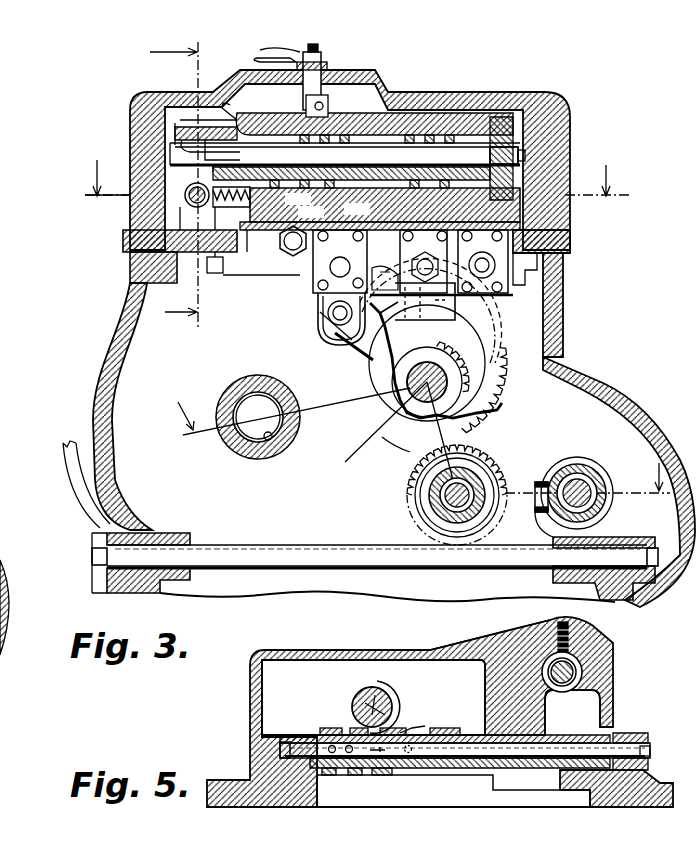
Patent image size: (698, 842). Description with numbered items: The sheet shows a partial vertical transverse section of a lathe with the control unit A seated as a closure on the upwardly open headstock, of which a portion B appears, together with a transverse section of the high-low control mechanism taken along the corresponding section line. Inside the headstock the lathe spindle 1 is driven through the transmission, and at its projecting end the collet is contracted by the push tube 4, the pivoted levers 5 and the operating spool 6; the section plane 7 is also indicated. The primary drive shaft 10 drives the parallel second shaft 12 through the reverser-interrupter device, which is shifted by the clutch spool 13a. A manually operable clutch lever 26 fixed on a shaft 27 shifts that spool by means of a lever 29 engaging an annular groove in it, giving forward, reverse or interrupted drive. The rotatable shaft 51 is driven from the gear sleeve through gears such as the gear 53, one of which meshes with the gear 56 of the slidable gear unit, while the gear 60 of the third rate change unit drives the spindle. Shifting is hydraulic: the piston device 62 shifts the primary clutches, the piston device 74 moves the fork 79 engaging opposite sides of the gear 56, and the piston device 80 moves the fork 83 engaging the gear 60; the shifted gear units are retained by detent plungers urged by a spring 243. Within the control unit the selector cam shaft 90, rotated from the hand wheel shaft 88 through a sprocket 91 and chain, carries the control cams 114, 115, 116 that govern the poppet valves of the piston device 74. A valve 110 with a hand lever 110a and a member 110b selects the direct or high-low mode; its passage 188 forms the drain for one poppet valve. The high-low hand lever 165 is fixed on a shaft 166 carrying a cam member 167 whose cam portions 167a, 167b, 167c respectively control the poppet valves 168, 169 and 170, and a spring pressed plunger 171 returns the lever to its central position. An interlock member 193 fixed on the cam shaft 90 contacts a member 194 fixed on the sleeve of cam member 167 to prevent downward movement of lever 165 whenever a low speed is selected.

In FIG. 3, the lathe spindle 1 is at (228, 455).
In FIG. 3, the push tube 4 is at (272, 440).
In FIG. 3, the pivoted levers 5 is at (165, 186).
In FIG. 3, the operating spool 6 is at (423, 438).
In FIG. 3, the section line 7- 7 is at (358, 169).
In FIG. 3, the primary drive shaft 10 is at (598, 506).
In FIG. 3, the second shaft 12 is at (470, 480).
In FIG. 3, the clutch spool 13a is at (585, 470).
In FIG. 3, the clutch lever 26 is at (65, 458).
In FIG. 3, the shaft 27 is at (273, 552).
In FIG. 3, the lever 29 is at (545, 510).
In FIG. 3, the rotatable shaft 51 is at (375, 432).
In FIG. 3, the gear 53 is at (412, 480).
In FIG. 3, the gear 56 is at (380, 379).
In FIG. 3, the gear 60 is at (500, 374).
In FIG. 3, the piston device 62 is at (512, 280).
In FIG. 3, the piston device 74 is at (315, 280).
In FIG. 3, the fork 79 is at (348, 342).
In FIG. 3, the piston device 80 is at (468, 308).
In FIG. 3, the fork 83 is at (455, 312).
In FIG. 5, the shaft 88 is at (572, 672).
In FIG. 3, the selector cam shaft 90 is at (388, 150).
In FIG. 5, the selector cam shaft 90 is at (370, 703).
In FIG. 3, the sprocket 91 is at (176, 131).
In FIG. 3, the valve 110 is at (338, 60).
In FIG. 3, the hand lever 110a is at (268, 45).
In FIG. 3, the valve member 110b is at (318, 56).
In FIG. 3, the control cam 114 is at (298, 200).
In FIG. 3, the control cam 115 is at (311, 213).
In FIG. 3, the control cam 116 is at (357, 210).
In FIG. 5, the hand lever 165 is at (632, 740).
In FIG. 3, the shaft 166 is at (197, 205).
In FIG. 5, the shaft 166 is at (524, 752).
In FIG. 3, the cam member 167 is at (130, 249).
In FIG. 5, the cam member 167 is at (420, 733).
In FIG. 5, the cam portion 167a is at (333, 762).
In FIG. 5, the cam portion 167b is at (352, 765).
In FIG. 5, the cam portion 167c is at (410, 762).
In FIG. 5, the poppet valve 168 is at (328, 730).
In FIG. 5, the poppet valve 169 is at (350, 732).
In FIG. 5, the poppet valve 170 is at (408, 768).
In FIG. 3, the spring pressed plunger 171 is at (237, 260).
In FIG. 3, the passage 188 is at (245, 108).
In FIG. 3, the interlock member 193 is at (185, 146).
In FIG. 5, the interlock member 193 is at (398, 712).
In FIG. 3, the interlock member 194 is at (215, 160).
In FIG. 5, the interlock member 194 is at (410, 729).
In FIG. 3, the spring 243 is at (320, 338).
In FIG. 3, the control unit A is at (591, 149).
In FIG. 3, the headstock portion B is at (578, 355).